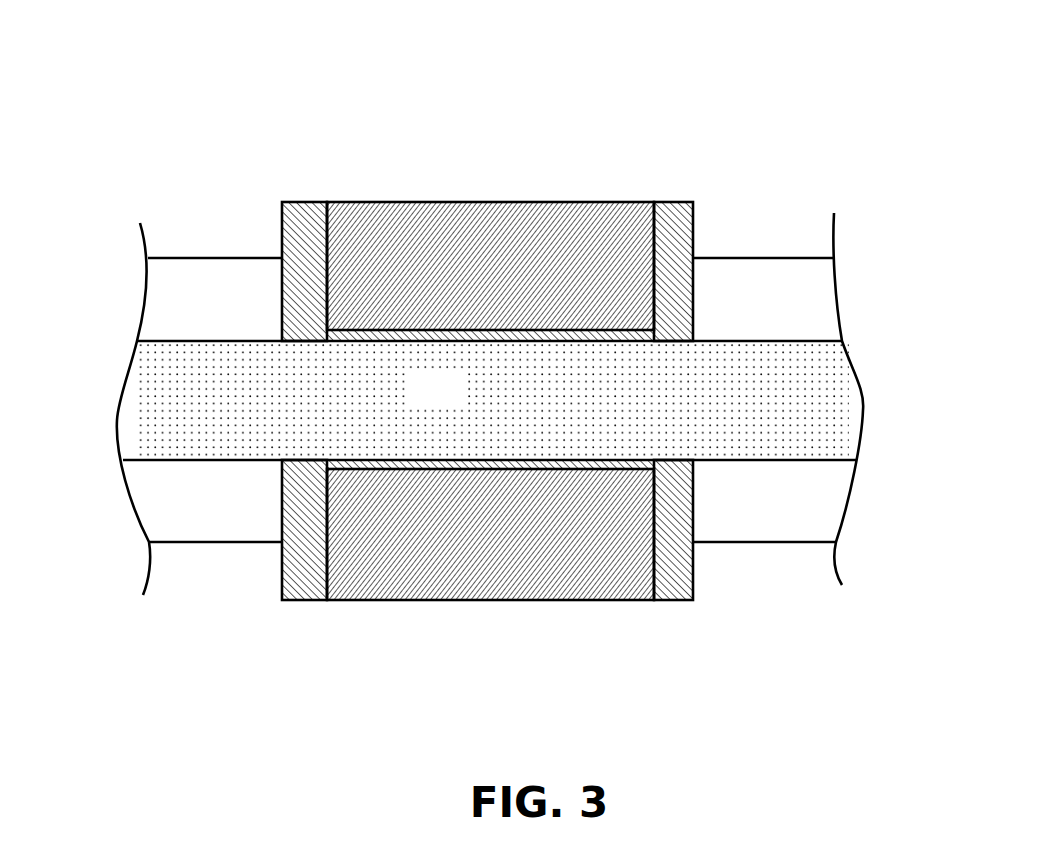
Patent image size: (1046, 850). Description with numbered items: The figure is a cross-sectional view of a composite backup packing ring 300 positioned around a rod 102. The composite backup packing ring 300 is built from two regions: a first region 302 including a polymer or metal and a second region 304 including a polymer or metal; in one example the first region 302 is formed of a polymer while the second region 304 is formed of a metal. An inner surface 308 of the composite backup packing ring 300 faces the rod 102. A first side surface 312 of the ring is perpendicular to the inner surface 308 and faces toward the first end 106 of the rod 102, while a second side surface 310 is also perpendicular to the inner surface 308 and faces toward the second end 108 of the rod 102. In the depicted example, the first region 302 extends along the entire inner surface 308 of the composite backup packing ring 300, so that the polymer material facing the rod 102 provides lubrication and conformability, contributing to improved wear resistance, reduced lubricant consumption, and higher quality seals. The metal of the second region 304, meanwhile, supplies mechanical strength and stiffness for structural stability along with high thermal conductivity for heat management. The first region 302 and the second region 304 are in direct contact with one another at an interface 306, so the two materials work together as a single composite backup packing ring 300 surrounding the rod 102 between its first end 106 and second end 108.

The composite backup packing ring 300 is at (612, 112).
The rod 102 is at (414, 400).
The first end 106 is at (106, 407).
The second end 108 is at (880, 445).
The first region 302 is at (676, 207).
The second region 304 is at (479, 202).
The interface 306 is at (323, 230).
The inner surface 308 is at (649, 349).
The second side surface 310 is at (694, 245).
The first side surface 312 is at (282, 247).